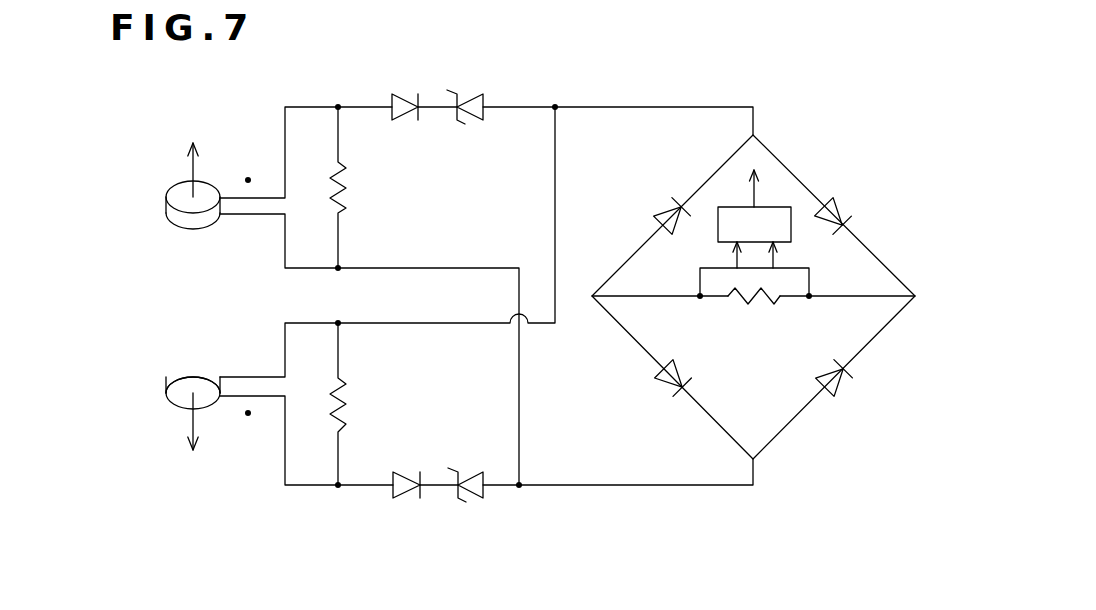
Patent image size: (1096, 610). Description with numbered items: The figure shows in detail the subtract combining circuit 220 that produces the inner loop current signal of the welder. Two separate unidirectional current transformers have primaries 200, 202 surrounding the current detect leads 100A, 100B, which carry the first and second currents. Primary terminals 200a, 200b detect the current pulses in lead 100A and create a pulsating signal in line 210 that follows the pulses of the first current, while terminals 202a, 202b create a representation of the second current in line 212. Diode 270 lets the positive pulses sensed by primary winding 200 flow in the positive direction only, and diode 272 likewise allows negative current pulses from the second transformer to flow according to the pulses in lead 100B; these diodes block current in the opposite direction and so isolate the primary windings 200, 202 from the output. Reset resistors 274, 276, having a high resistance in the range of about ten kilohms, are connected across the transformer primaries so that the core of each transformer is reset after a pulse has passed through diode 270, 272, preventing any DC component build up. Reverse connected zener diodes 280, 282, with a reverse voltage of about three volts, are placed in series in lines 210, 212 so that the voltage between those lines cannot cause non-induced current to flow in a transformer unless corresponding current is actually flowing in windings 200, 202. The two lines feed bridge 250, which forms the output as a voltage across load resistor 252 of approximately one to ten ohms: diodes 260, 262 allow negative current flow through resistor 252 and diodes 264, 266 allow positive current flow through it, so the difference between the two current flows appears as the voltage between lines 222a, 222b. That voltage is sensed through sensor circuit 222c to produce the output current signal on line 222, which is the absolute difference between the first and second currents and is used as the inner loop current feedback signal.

The current detect lead 100A is at (190, 170).
The current detect lead 100B is at (190, 428).
The primary winding of current transformer CT1 200 is at (196, 231).
The primary terminal 200a is at (263, 197).
The primary terminal 200b is at (262, 214).
The primary winding of current transformer CT2 202 is at (199, 360).
The primary terminal 202a is at (256, 377).
The primary terminal 202b is at (262, 396).
The output line 210 is at (622, 107).
The output line 212 is at (607, 487).
The subtract combining circuit 220 is at (786, 108).
The output line 222 is at (791, 213).
The sensing line 222a is at (734, 260).
The sensing line 222b is at (776, 262).
The sensor circuit 222c is at (757, 196).
The bridge 250 is at (612, 330).
The load resistor 252 is at (772, 293).
The diode 260 is at (666, 210).
The diode 262 is at (838, 383).
The diode 264 is at (674, 385).
The diode 266 is at (837, 203).
The diode 270 is at (403, 96).
The diode 272 is at (407, 497).
The reset resistor 274 is at (345, 204).
The reset resistor 276 is at (345, 382).
The zener diode 280 is at (474, 122).
The zener diode 282 is at (470, 499).